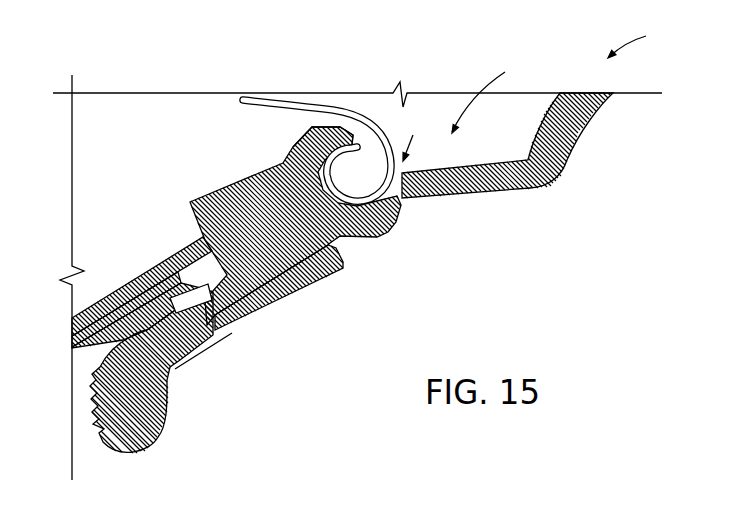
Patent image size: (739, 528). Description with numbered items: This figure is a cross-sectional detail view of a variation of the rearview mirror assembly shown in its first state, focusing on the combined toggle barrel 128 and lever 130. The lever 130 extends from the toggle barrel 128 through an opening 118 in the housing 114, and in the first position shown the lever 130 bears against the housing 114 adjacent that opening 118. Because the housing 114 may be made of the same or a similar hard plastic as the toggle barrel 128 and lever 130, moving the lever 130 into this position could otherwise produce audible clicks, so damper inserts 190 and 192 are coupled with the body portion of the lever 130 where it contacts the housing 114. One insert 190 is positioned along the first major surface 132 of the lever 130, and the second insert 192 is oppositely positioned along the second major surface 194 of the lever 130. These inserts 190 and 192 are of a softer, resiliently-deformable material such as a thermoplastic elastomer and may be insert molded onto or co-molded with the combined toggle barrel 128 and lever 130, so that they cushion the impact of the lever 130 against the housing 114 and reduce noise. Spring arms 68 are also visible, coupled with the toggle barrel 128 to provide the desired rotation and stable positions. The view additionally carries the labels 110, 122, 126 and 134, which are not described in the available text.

The spring arms 68 is at (328, 105).
The connector assembly 110 is at (645, 40).
The housing 114 is at (547, 168).
The opening 118 is at (416, 137).
The panel 122 is at (203, 252).
The mounting region 126 is at (494, 92).
The toggle barrel 128 is at (312, 142).
The lever 130 is at (170, 373).
The first major surface 132 is at (97, 317).
The clip body 134 is at (233, 200).
The damper insert 190 is at (160, 303).
The damper insert 192 is at (298, 282).
The second major surface 194 is at (190, 343).